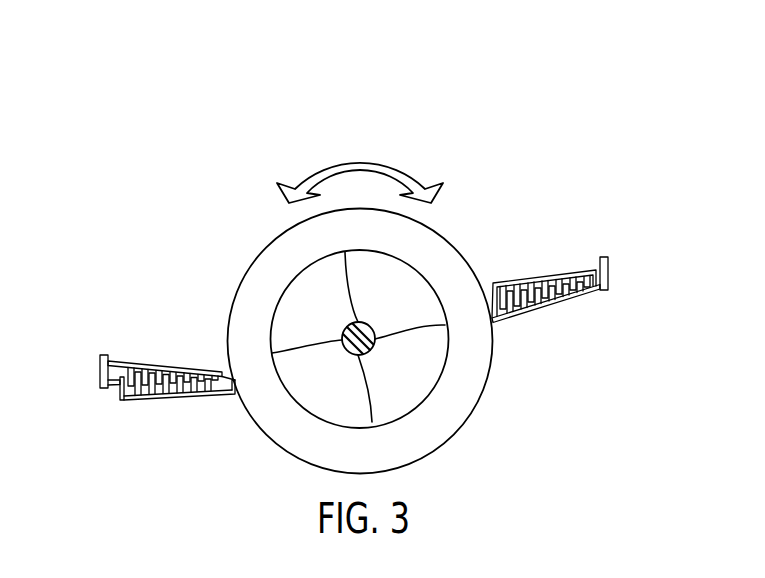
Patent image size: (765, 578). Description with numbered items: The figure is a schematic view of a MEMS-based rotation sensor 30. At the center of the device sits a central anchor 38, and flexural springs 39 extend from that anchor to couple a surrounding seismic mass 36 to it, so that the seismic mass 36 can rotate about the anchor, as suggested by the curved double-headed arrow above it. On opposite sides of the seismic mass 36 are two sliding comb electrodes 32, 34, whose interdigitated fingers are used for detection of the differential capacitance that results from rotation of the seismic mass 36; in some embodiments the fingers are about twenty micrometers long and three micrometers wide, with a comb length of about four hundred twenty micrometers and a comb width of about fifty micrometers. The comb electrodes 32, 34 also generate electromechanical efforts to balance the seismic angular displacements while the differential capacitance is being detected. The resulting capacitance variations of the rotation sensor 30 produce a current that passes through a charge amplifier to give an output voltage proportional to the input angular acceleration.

The MEMS-based rotation sensor 30 is at (497, 183).
The sliding comb electrode 32 is at (157, 362).
The sliding comb electrode 34 is at (520, 278).
The seismic mass 36 is at (455, 248).
The central anchor 38 is at (368, 325).
The flexural springs 39 is at (390, 333).